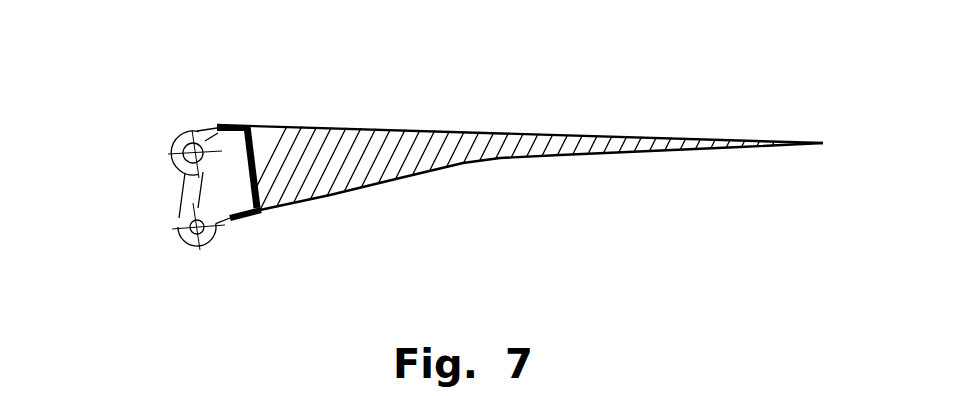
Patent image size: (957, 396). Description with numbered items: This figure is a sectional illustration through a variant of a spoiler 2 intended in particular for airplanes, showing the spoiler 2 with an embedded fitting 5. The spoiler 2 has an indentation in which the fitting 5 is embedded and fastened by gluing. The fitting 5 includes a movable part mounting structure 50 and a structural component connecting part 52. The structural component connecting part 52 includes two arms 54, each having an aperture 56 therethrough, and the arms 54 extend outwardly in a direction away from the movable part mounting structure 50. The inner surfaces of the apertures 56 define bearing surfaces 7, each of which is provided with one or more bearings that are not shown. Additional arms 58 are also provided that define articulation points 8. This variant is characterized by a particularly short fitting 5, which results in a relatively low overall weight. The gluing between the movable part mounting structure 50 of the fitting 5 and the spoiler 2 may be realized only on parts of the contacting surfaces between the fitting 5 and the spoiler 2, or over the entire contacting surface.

The spoiler 2 is at (572, 133).
The fitting 5 is at (225, 185).
The bearing surface 7 is at (181, 170).
The articulation point 8 is at (185, 243).
The movable part mounting structure 50 is at (236, 153).
The structural component connecting part 52 is at (157, 139).
The arm 54 is at (195, 132).
The aperture 56 is at (203, 131).
The additional arm 58 is at (212, 240).